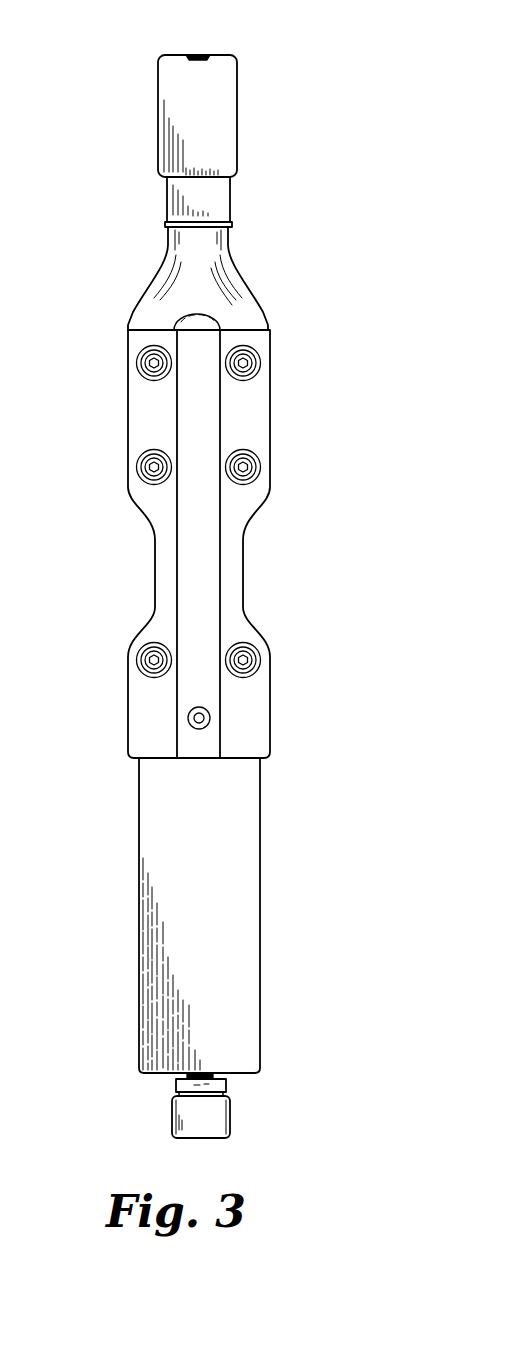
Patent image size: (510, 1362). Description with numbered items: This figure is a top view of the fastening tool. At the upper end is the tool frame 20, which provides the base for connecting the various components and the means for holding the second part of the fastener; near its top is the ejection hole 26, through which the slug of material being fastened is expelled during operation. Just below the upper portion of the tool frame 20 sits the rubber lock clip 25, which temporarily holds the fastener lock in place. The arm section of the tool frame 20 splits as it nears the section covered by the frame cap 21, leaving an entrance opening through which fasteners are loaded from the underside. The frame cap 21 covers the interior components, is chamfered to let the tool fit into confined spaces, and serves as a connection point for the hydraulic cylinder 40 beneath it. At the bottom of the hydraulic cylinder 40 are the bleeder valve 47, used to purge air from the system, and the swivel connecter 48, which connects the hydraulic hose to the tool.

The tool frame 20 is at (217, 108).
The frame cap 21 is at (203, 435).
The rubber lock clip 25 is at (167, 200).
The ejection hole 26 is at (197, 55).
The hydraulic cylinder 40 is at (213, 818).
The bleeder valve 47 is at (208, 1072).
The swivel connecter 48 is at (212, 1109).